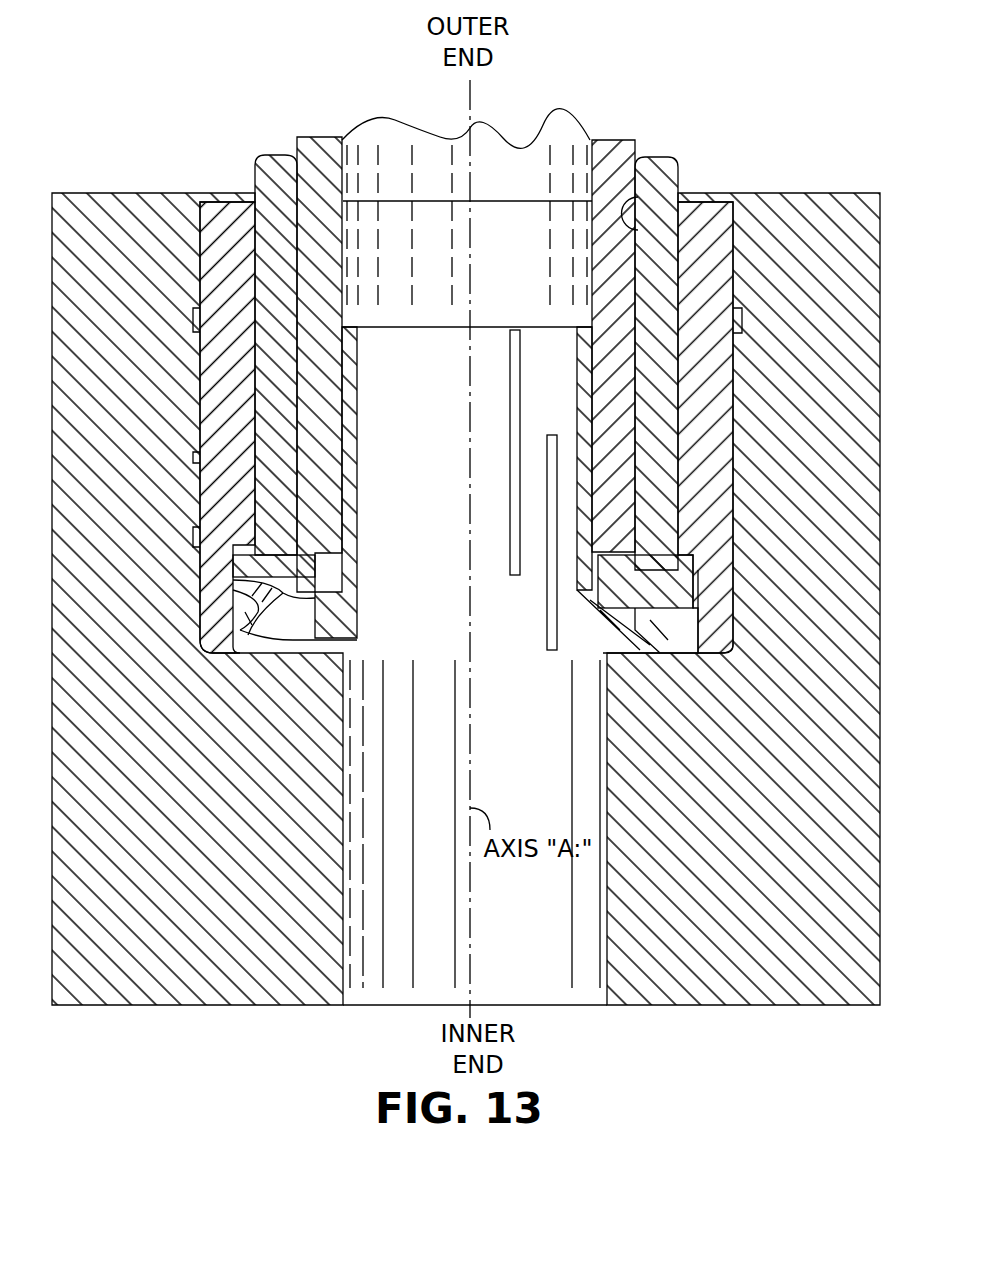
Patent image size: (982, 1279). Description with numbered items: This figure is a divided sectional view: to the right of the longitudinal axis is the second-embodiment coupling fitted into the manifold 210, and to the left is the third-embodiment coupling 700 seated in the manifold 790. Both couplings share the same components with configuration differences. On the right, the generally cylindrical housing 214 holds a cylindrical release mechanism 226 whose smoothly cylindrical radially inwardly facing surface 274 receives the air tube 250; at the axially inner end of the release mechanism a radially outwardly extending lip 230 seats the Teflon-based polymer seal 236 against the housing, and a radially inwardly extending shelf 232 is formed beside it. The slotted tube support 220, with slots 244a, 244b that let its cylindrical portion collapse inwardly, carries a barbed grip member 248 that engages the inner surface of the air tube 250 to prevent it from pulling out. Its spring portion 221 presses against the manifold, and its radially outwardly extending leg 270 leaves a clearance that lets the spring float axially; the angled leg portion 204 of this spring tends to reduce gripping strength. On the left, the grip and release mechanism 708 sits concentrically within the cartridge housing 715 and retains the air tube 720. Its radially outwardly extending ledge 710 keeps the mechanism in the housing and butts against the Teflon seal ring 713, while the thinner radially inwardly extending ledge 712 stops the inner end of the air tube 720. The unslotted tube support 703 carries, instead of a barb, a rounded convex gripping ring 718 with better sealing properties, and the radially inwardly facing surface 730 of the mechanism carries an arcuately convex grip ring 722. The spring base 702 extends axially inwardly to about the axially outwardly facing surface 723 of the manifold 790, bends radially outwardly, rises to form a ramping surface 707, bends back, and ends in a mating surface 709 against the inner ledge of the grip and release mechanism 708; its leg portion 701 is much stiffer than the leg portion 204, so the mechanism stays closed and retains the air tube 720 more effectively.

The coupling 700 is at (258, 122).
The grip and release mechanism 708 is at (270, 178).
The cartridge housing 715 is at (210, 225).
The air tube 720 is at (318, 163).
The radially inwardly facing surface 730 is at (297, 192).
The air tube 250 is at (610, 157).
The release mechanism 226 is at (654, 172).
The radially inwardly facing surface 274 is at (640, 197).
The housing 214 is at (714, 233).
The gripping ring 718 is at (342, 330).
The barbed grip member 248 is at (592, 322).
The slot 244b is at (512, 342).
The tube support 703 is at (440, 378).
The grip ring 722 is at (318, 375).
The tube support 220 is at (592, 383).
The Teflon seal ring 713 is at (238, 543).
The Teflon-based polymer seal 236 is at (682, 572).
The radially outwardly extending ledge 710 is at (232, 593).
The mating surface 709 is at (292, 573).
The radially outwardly extending lip 230 is at (695, 608).
The radially inwardly extending ledge 712 is at (312, 590).
The radially inwardly extending shelf 232 is at (623, 590).
The leg portion 701 is at (310, 638).
The axially outwardly facing surface 723 is at (347, 650).
The spring portion 221 is at (600, 650).
The slot 244a is at (598, 629).
The radially outwardly extending leg 270 is at (698, 613).
The ramping surface 707 is at (262, 655).
The spring base 702 is at (287, 647).
The angled leg portion 204 is at (562, 660).
The manifold 790 is at (197, 967).
The manifold 210 is at (737, 1000).